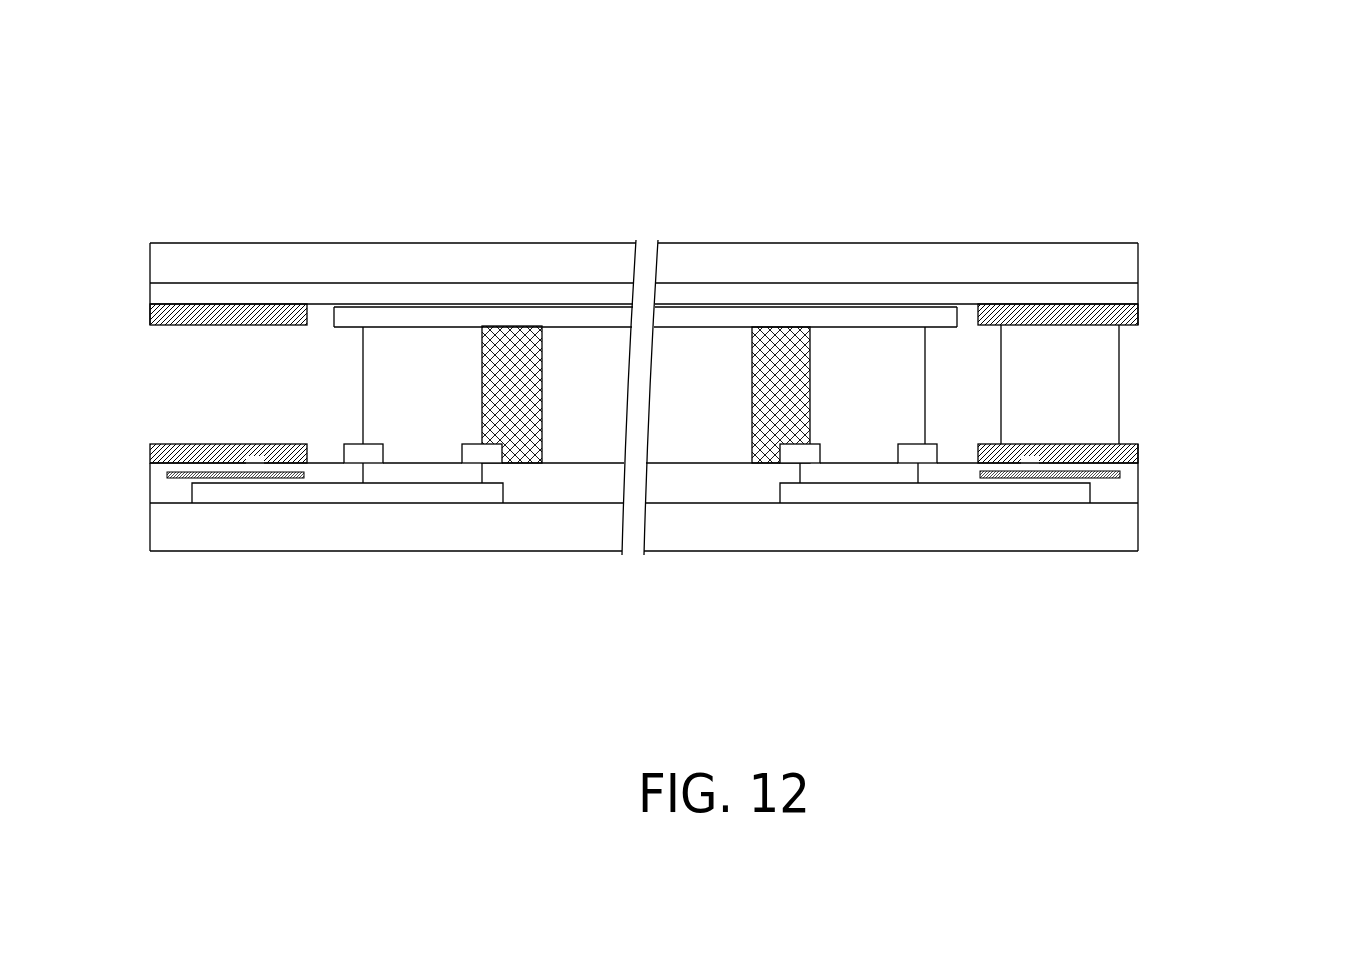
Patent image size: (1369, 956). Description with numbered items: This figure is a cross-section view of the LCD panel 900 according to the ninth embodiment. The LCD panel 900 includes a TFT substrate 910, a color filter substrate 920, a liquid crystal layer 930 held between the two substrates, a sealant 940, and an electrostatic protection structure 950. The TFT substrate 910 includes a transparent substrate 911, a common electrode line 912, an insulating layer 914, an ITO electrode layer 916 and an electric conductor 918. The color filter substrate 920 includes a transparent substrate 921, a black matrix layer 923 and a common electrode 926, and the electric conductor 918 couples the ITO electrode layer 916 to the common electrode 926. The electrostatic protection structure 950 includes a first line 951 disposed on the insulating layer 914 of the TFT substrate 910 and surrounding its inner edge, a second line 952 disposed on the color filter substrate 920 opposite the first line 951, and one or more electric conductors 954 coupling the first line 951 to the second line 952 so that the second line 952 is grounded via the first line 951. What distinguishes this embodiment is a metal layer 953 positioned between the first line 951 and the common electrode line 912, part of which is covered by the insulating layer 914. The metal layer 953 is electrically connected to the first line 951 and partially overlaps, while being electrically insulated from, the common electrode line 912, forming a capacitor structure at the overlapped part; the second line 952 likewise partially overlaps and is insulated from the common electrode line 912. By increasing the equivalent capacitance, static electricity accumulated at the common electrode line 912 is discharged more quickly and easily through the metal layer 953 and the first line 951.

The LCD panel 900 is at (1282, 90).
The TFT substrate 910 is at (140, 465).
The transparent substrate 911 is at (1108, 538).
The common electrode line 912 is at (885, 497).
The insulating layer 914 is at (1122, 491).
The ITO electrode layer 916 is at (810, 470).
The electric conductor 918 is at (873, 345).
The color filter substrate 920 is at (140, 247).
The transparent substrate 921 is at (1097, 255).
The black matrix layer 923 is at (1115, 293).
The common electrode 926 is at (930, 318).
The liquid crystal layer 930 is at (698, 345).
The sealant 940 is at (787, 345).
The electrostatic protection structure 950 is at (1260, 315).
The first line 951 is at (1137, 443).
The second line 952 is at (1135, 304).
The metal layer 953 is at (1105, 474).
The electric conductor 954 is at (1104, 362).